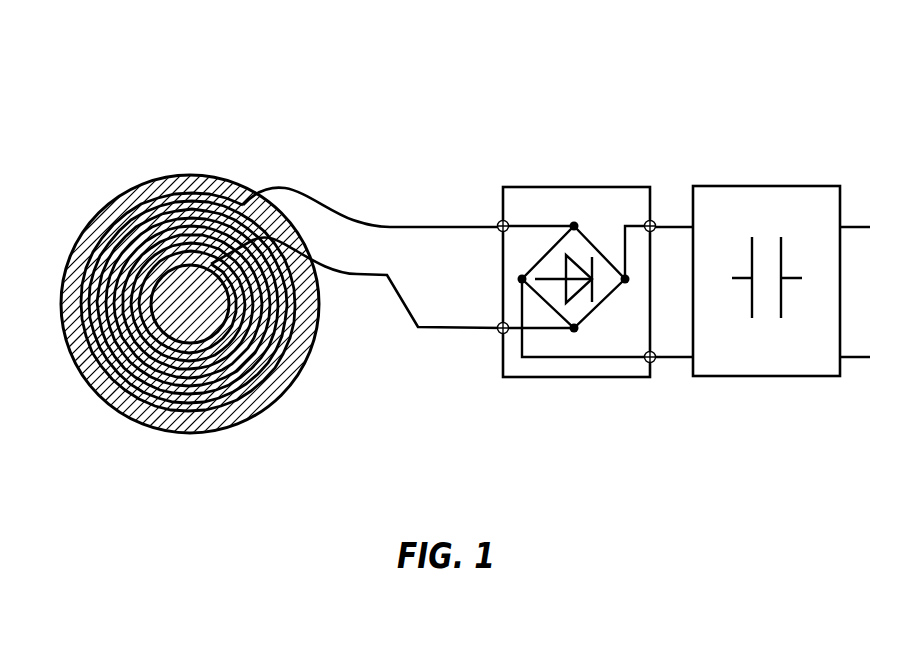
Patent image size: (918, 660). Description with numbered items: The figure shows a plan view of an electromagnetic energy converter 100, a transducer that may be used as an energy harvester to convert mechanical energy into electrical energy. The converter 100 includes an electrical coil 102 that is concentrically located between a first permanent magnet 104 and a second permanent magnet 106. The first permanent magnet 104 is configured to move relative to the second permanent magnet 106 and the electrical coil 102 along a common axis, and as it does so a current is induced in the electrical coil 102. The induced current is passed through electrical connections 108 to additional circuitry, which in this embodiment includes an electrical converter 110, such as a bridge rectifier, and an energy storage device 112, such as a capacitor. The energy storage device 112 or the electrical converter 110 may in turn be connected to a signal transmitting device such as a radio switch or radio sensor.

The electromagnetic energy converter 100 is at (177, 110).
The electrical coil 102 is at (133, 417).
The first permanent magnet 104 is at (200, 328).
The second permanent magnet 106 is at (180, 183).
The electrical connections 108 is at (347, 213).
The electrical converter 110 is at (563, 187).
The energy storage device 112 is at (763, 186).